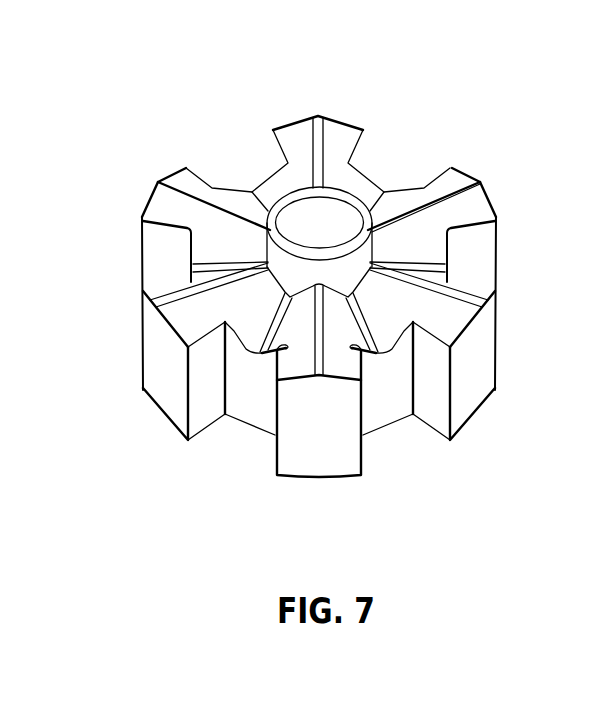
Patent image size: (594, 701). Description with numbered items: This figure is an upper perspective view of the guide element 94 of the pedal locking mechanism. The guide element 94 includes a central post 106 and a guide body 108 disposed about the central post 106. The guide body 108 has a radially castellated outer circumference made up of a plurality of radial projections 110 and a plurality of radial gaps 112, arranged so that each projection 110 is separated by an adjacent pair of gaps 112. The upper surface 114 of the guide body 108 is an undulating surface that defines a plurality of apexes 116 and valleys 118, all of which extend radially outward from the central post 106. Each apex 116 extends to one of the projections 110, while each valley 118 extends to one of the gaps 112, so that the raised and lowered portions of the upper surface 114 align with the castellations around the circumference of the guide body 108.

The guide element 94 is at (458, 100).
The central post 106 is at (308, 210).
The guide body 108 is at (401, 223).
The radial projection 110 is at (163, 388).
The radial gap 112 is at (240, 441).
The upper surface 114 is at (463, 209).
The apex 116 is at (184, 197).
The valley 118 is at (268, 322).